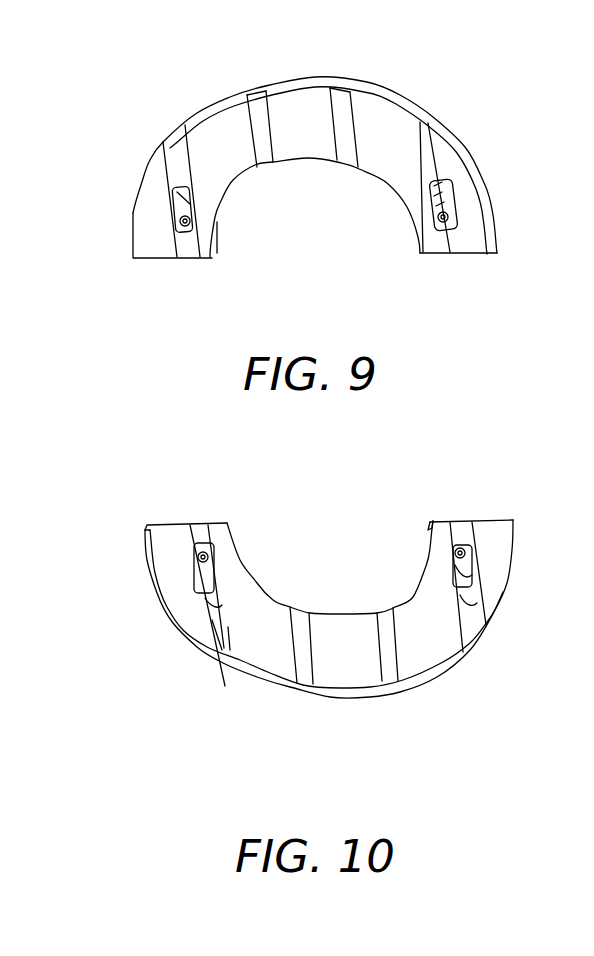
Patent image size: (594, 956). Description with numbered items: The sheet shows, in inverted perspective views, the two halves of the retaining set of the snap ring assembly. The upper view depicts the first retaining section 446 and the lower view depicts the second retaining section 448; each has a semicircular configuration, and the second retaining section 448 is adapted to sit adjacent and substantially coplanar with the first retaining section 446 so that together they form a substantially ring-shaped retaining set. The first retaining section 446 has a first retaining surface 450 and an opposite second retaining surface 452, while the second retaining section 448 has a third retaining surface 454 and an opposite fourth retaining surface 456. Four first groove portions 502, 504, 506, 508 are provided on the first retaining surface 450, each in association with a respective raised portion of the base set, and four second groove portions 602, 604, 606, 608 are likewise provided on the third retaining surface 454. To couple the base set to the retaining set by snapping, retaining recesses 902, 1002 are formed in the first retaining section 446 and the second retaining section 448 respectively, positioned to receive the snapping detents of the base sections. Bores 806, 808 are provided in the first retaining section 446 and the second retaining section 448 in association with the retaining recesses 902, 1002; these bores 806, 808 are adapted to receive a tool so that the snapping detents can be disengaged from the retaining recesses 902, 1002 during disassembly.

In FIG. 9, the first retaining section 446 is at (413, 72).
In FIG. 10, the second retaining section 448 is at (320, 489).
In FIG. 9, the first retaining surface 450 is at (477, 234).
In FIG. 9, the second retaining surface 452 is at (504, 200).
In FIG. 10, the third retaining surface 454 is at (501, 551).
In FIG. 10, the fourth retaining surface 456 is at (447, 674).
In FIG. 9, the first groove portion 502 is at (438, 147).
In FIG. 9, the first groove portion 504 is at (342, 94).
In FIG. 9, the first groove portion 506 is at (163, 146).
In FIG. 9, the first groove portion 508 is at (262, 99).
In FIG. 10, the second groove portion 602 is at (470, 603).
In FIG. 10, the second groove portion 604 is at (388, 668).
In FIG. 10, the second groove portion 606 is at (232, 653).
In FIG. 10, the second groove portion 608 is at (310, 673).
In FIG. 9, the bore 806 is at (186, 238).
In FIG. 10, the bore 808 is at (199, 548).
In FIG. 9, the retaining recess 902 is at (178, 207).
In FIG. 10, the retaining recess 1002 is at (203, 628).